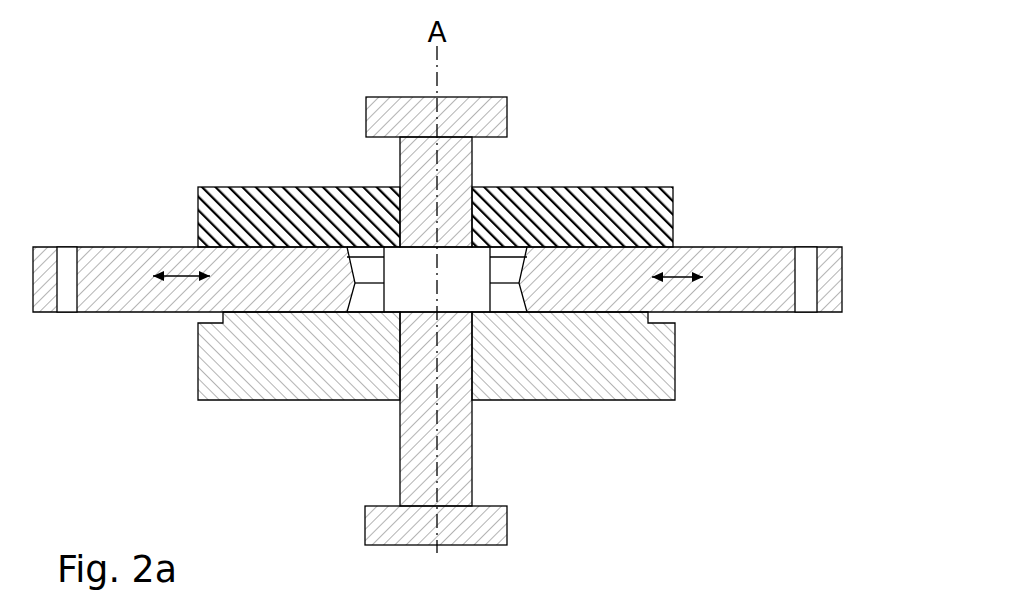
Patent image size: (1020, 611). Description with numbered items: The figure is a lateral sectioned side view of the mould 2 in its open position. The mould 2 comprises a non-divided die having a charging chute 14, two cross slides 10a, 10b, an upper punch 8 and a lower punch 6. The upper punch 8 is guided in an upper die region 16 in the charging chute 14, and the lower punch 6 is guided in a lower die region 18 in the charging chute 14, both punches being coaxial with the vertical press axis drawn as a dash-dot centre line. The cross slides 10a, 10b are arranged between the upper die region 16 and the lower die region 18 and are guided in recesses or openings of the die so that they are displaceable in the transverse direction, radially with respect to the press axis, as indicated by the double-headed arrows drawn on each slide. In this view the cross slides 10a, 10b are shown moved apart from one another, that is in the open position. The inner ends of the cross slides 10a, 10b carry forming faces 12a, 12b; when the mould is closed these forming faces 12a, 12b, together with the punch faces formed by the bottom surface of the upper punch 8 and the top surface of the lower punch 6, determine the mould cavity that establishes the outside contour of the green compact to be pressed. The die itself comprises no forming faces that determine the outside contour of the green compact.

The mould 2 is at (675, 85).
The lower punch 6 is at (408, 432).
The upper punch 8 is at (476, 102).
The cross slide 10a is at (103, 255).
The cross slide 10b is at (765, 284).
The forming face 12a is at (363, 257).
The forming face 12b is at (507, 292).
The charging chute 14 is at (401, 294).
The upper die region 16 is at (692, 212).
The lower die region 18 is at (692, 341).